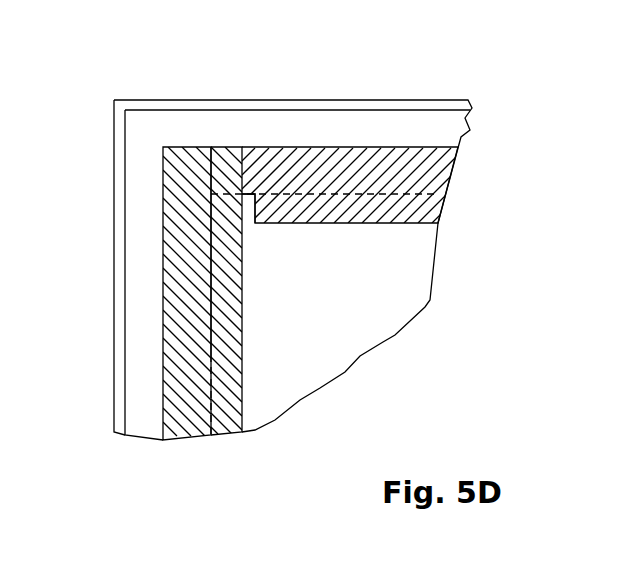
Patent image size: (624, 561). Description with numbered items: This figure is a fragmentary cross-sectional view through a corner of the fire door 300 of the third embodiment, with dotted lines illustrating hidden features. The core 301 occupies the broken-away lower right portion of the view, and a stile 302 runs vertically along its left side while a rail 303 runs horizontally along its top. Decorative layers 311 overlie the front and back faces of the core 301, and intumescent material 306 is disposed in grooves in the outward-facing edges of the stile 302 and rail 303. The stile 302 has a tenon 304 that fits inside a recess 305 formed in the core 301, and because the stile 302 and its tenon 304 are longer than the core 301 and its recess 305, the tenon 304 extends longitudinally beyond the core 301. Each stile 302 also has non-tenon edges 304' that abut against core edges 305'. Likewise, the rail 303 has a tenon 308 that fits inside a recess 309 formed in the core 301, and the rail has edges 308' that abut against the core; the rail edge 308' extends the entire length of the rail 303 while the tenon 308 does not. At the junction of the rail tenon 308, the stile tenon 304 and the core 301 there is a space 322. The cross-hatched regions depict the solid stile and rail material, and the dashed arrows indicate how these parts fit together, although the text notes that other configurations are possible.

The fire door 300 is at (122, 460).
The core 301 is at (355, 335).
The stile 302 is at (195, 290).
The rail 303 is at (442, 172).
The tenon 304 is at (141, 291).
The stile edge 304' is at (166, 455).
The recess 305 is at (326, 381).
The core edge 305' is at (286, 413).
The intumescent material 306 is at (228, 122).
The tenon 308 is at (334, 215).
The rail edge 308' is at (349, 126).
The recess 309 is at (395, 205).
The decorative layer 311 is at (423, 105).
The space 322 is at (246, 224).